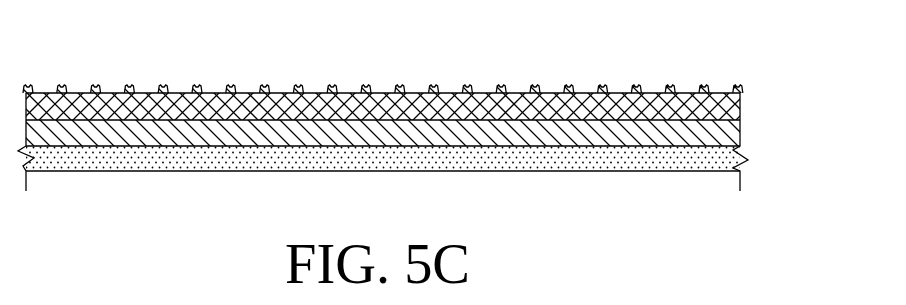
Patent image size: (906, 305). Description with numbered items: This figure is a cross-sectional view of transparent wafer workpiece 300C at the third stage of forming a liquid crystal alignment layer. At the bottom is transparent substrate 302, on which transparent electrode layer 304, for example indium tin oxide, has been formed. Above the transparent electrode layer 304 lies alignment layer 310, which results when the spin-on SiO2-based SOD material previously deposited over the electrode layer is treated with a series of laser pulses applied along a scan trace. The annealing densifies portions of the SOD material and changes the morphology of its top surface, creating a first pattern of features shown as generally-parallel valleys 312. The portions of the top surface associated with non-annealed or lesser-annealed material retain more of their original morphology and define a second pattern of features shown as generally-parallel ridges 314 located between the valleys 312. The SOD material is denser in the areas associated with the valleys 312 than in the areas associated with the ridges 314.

The transparent wafer workpiece 300C is at (193, 58).
The transparent substrate 302 is at (530, 171).
The transparent electrode layer 304 is at (733, 130).
The alignment layer 310 is at (421, 73).
The valleys 312 is at (417, 92).
The ridges 314 is at (570, 87).